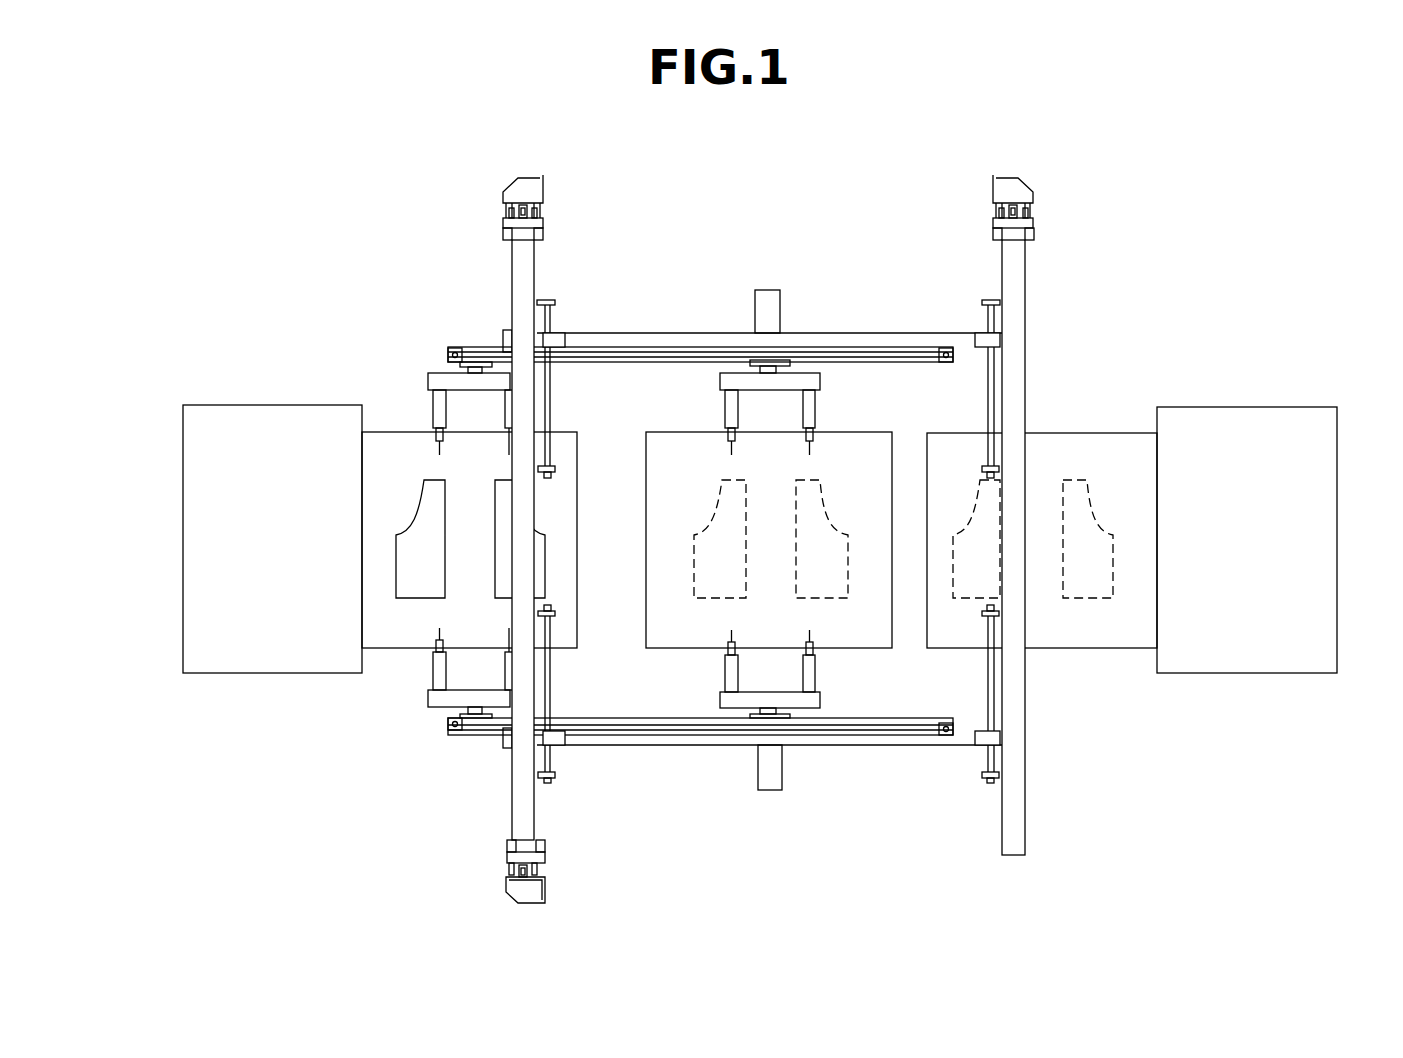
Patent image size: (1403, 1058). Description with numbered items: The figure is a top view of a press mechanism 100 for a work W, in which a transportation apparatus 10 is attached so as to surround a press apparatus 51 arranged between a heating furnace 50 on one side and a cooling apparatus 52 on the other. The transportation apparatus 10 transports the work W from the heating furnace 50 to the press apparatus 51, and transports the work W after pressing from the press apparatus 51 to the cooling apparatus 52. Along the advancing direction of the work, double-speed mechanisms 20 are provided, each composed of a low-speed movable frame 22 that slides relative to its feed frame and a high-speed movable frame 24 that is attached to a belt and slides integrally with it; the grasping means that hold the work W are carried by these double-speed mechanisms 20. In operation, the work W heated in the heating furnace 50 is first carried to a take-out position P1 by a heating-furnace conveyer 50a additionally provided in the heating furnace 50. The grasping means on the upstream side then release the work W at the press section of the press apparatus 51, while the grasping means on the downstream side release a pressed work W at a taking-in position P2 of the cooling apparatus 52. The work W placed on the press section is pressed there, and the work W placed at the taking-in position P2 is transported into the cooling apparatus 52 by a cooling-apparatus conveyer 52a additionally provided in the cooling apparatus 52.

The press mechanism 100 is at (1182, 235).
The transportation apparatus 10 is at (965, 312).
The double-speed mechanism 20 is at (855, 368).
The low-speed movable frame 22 is at (695, 352).
The high-speed movable frame 24 is at (800, 360).
The heating furnace 50 is at (294, 422).
The heating-furnace conveyer 50a is at (403, 440).
The press apparatus 51 is at (660, 438).
The cooling apparatus 52 is at (1178, 658).
The cooling-apparatus conveyer 52a is at (940, 632).
The work W is at (405, 600).
The take-out position P1 is at (483, 648).
The taking-in position P2 is at (948, 432).